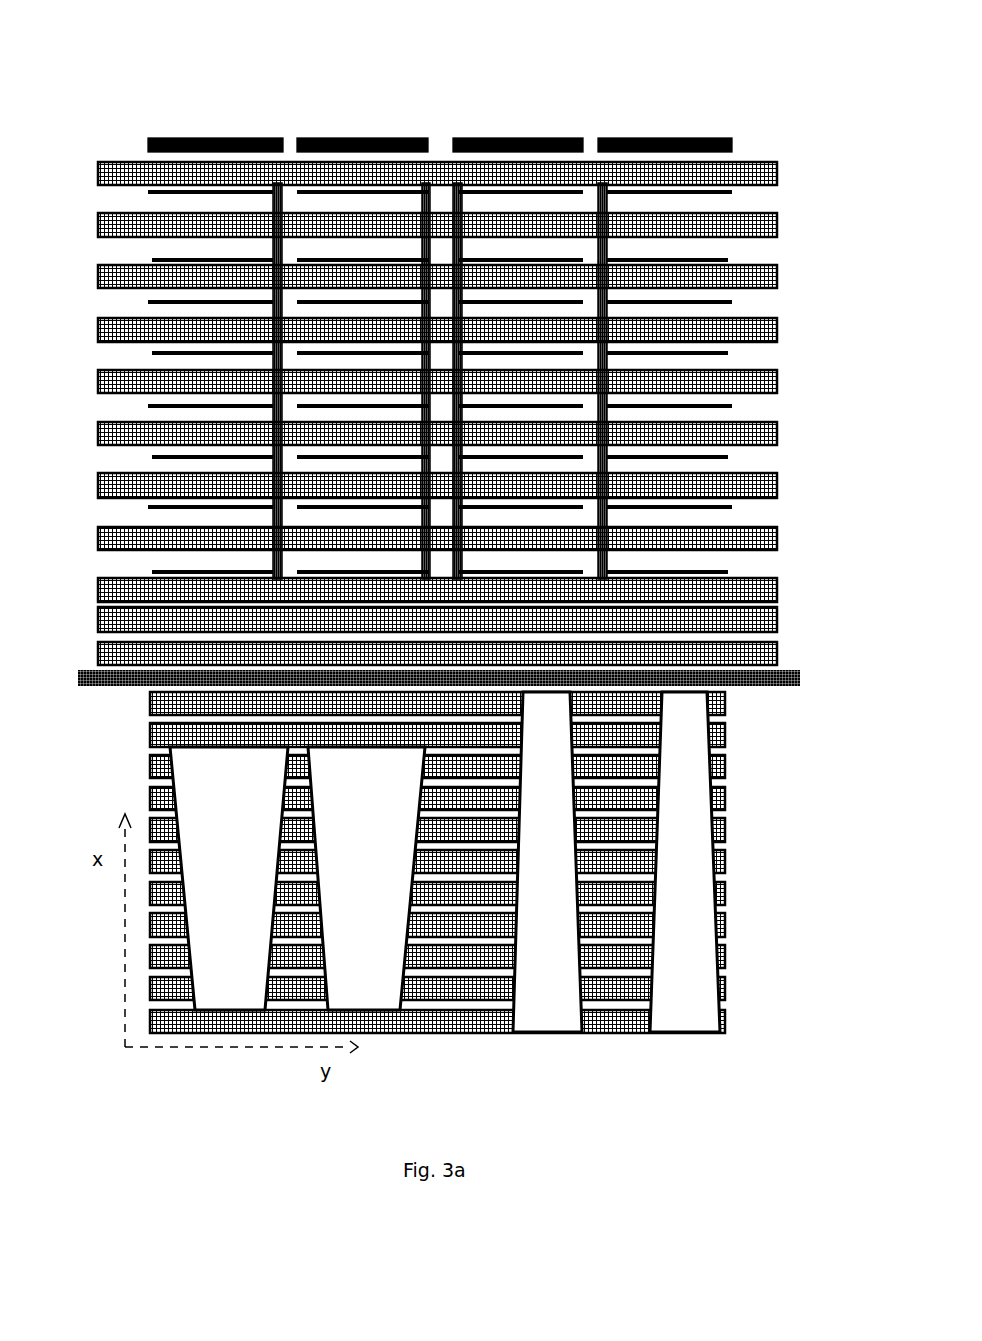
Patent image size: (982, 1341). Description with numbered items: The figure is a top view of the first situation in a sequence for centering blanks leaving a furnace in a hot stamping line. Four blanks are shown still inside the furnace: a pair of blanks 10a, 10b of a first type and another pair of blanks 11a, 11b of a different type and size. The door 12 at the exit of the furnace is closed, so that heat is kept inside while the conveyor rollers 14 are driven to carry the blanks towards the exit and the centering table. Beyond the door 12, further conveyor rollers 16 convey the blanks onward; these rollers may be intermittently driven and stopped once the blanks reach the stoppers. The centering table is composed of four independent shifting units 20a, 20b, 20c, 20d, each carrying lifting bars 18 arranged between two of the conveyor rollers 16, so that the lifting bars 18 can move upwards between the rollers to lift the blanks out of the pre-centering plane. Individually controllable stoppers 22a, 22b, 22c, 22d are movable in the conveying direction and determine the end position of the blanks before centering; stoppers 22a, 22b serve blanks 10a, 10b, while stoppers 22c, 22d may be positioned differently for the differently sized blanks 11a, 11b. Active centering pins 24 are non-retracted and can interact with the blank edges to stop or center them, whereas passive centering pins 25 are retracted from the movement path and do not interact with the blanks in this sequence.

The blank 10a is at (228, 975).
The blank 10b is at (375, 965).
The blank 11a is at (548, 1000).
The blank 11b is at (697, 965).
The door 12 is at (758, 673).
The conveyor rollers 14 is at (437, 985).
The conveyor rollers 16 is at (141, 539).
The lifting bars 18 is at (708, 301).
The shifting unit 20a is at (282, 162).
The shifting unit 20b is at (430, 193).
The shifting unit 20c is at (550, 192).
The shifting unit 20d is at (607, 160).
The stopper 22a is at (217, 138).
The stopper 22b is at (363, 138).
The stopper 22c is at (520, 138).
The stopper 22d is at (672, 138).
The active centering pins 24 is at (122, 306).
The passive centering pins 25 is at (772, 207).